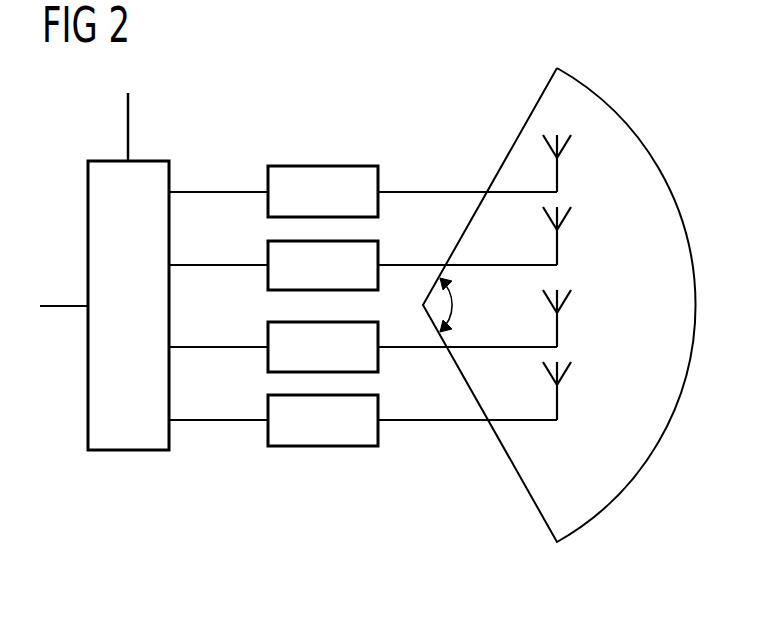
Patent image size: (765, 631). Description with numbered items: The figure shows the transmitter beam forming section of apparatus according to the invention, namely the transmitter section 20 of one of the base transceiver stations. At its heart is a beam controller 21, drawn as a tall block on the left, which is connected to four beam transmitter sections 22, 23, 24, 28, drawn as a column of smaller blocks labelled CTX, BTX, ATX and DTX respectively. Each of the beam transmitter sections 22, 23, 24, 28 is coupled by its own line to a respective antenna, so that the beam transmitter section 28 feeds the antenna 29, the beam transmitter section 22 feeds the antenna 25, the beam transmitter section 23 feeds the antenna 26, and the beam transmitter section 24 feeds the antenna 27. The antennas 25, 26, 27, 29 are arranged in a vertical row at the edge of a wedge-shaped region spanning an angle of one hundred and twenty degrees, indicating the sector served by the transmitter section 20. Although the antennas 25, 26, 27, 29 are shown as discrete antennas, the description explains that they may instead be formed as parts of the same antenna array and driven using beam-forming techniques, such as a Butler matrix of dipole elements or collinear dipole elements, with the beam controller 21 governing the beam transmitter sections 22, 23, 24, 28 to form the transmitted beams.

The transmitter section 20 is at (410, 158).
The beam controller 21 is at (129, 450).
The beam transmitter section 22 is at (268, 251).
The beam transmitter section 23 is at (268, 333).
The beam transmitter section 24 is at (323, 446).
The antenna 25 is at (558, 240).
The antenna 26 is at (558, 323).
The antenna 27 is at (558, 395).
The beam transmitter section 28 is at (323, 166).
The antenna 29 is at (558, 166).